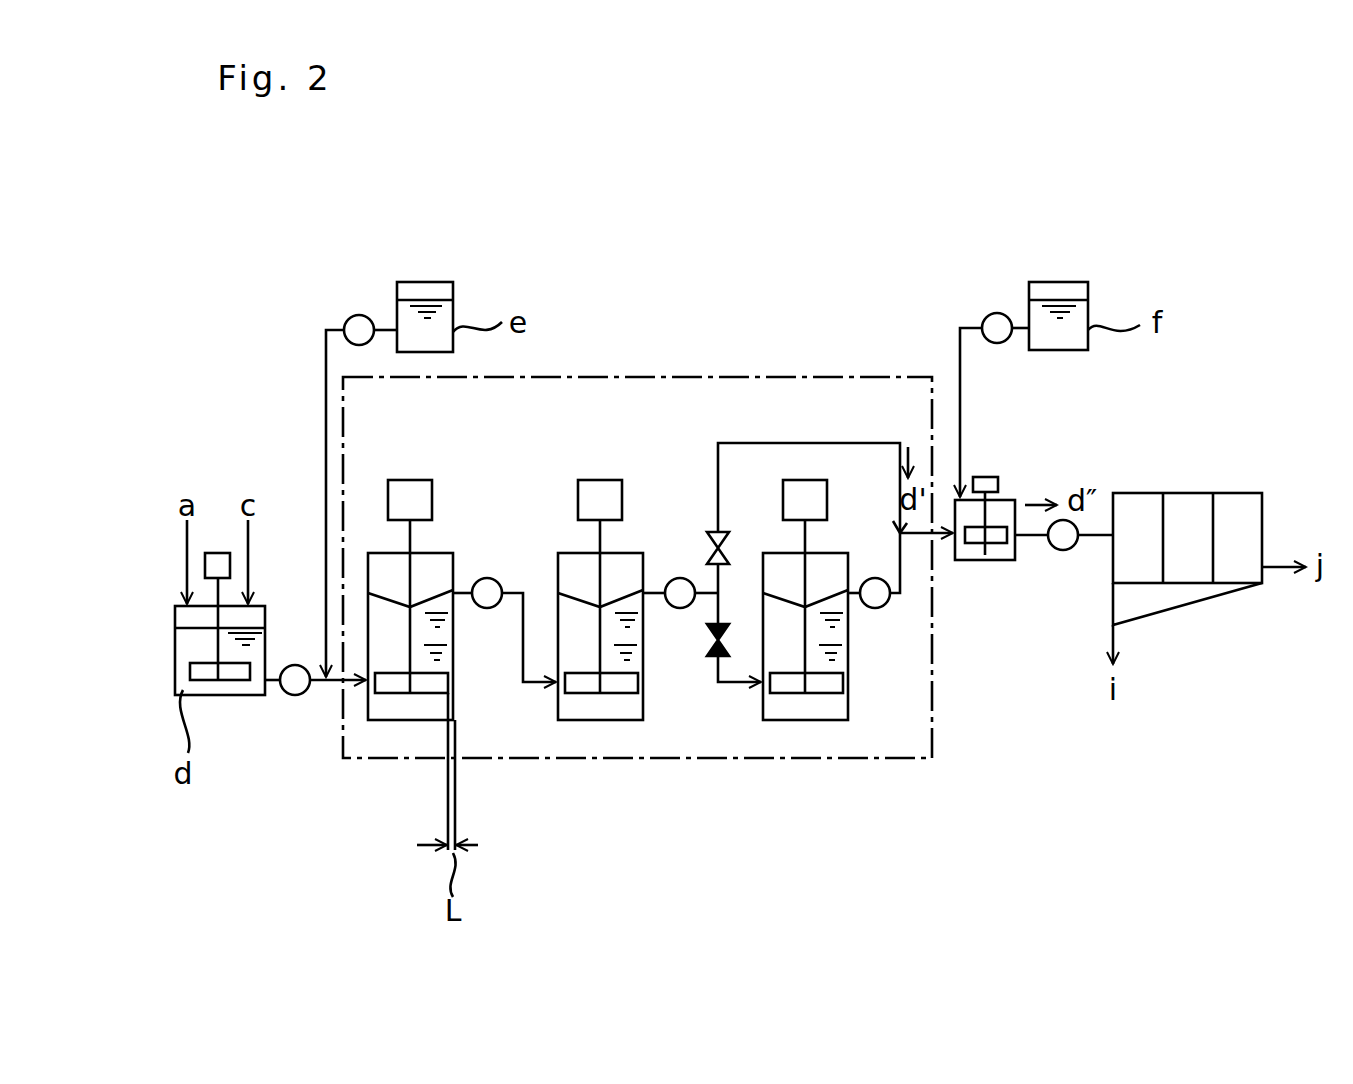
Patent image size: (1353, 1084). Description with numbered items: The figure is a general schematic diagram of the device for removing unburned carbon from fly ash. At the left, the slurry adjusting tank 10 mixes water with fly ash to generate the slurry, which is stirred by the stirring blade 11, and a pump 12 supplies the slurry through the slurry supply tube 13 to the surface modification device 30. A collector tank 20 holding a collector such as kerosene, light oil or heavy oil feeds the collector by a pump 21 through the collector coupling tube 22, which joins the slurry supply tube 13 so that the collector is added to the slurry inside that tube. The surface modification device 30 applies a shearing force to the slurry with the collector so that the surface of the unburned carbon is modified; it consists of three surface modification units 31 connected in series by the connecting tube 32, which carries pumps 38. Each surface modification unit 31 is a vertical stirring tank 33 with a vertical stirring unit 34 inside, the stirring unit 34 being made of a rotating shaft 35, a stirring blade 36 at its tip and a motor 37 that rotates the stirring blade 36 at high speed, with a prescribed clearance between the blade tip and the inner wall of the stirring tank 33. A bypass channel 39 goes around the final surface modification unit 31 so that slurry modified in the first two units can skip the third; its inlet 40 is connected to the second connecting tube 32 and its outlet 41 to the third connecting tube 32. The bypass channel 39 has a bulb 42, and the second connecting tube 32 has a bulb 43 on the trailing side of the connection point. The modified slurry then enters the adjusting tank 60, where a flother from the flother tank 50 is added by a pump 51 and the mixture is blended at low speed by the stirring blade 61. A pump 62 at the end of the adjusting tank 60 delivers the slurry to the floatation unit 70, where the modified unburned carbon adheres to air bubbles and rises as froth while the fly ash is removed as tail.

The slurry adjusting tank 10 is at (175, 650).
The stirring blade 11 is at (242, 676).
The pump 12 is at (300, 665).
The slurry supply tube 13 is at (313, 686).
The collector tank 20 is at (428, 282).
The pump 21 is at (364, 315).
The collector coupling tube 22 is at (326, 375).
The surface modification device 30 is at (747, 377).
The surface modification unit 31 is at (440, 549).
The connecting tube 32 is at (524, 692).
The stirring tank 33 is at (413, 577).
The stirring unit 34 is at (402, 541).
The rotating shaft 35 is at (453, 568).
The stirring blade 36 is at (393, 692).
The motor 37 is at (418, 480).
The pump 38 is at (485, 608).
The bypass channel 39 is at (823, 442).
The inlet 40 is at (716, 590).
The outlet 41 is at (903, 535).
The bulb 42 is at (728, 550).
The bulb 43 is at (712, 660).
The flother tank 50 is at (1070, 282).
The pump 51 is at (998, 313).
The adjusting tank 60 is at (1008, 488).
The stirring blade 61 is at (1003, 542).
The pump 62 is at (1068, 551).
The floatation unit 70 is at (1240, 493).